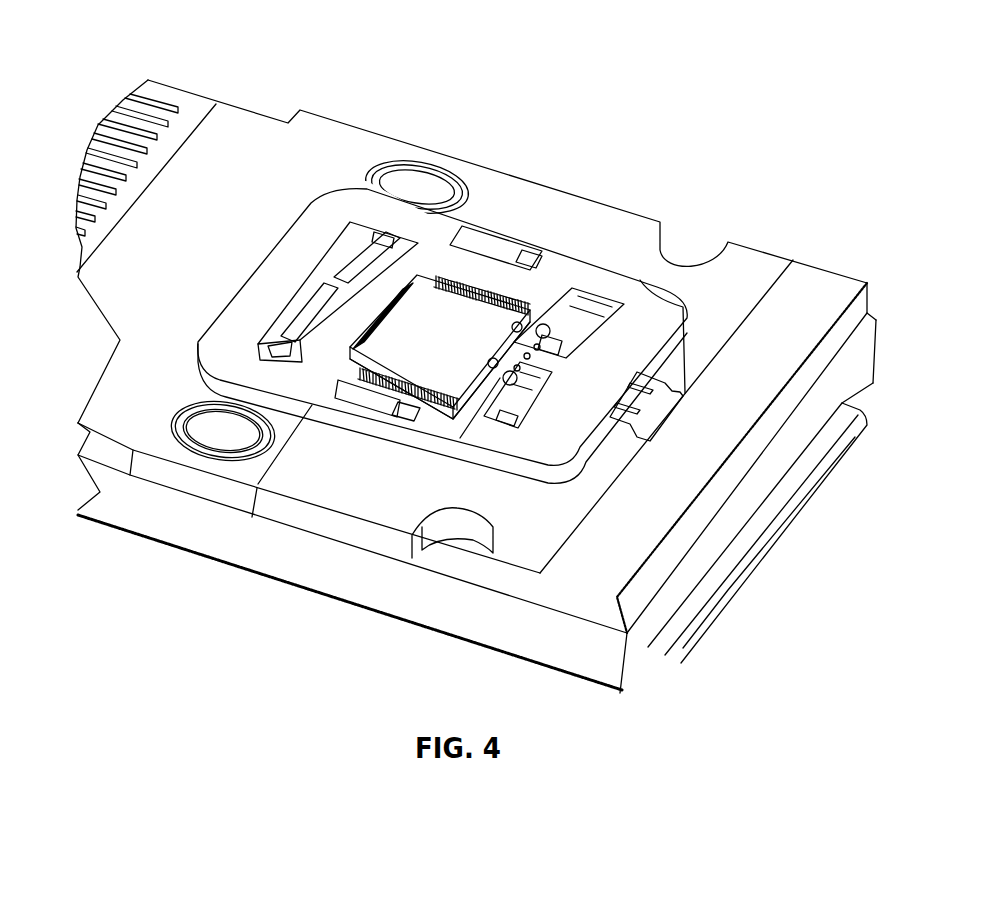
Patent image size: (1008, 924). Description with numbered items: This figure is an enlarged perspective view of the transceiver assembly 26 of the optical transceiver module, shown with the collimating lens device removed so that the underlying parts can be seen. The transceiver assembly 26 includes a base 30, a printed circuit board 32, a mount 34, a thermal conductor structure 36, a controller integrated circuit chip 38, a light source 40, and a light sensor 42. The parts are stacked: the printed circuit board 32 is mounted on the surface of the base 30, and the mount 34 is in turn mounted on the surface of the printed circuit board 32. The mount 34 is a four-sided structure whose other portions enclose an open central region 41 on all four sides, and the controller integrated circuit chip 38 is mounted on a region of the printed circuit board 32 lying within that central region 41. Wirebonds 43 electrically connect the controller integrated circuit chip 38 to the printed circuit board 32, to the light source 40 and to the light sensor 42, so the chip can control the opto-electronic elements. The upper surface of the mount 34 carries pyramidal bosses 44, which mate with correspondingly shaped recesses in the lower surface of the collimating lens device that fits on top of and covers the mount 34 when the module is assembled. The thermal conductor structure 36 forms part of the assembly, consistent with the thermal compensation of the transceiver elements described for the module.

The transceiver assembly 26 is at (640, 58).
The base 30 is at (227, 553).
The printed circuit board (PCB) 32 is at (587, 605).
The mount 34 is at (657, 297).
The thermal conductor structure 36 is at (655, 400).
The controller integrated circuit chip 38 is at (393, 355).
The light source 40 is at (470, 400).
The central region 41 is at (417, 273).
The light sensor 42 is at (610, 300).
The wirebonds 43 is at (365, 325).
The pyramidal bosses 44 is at (383, 237).